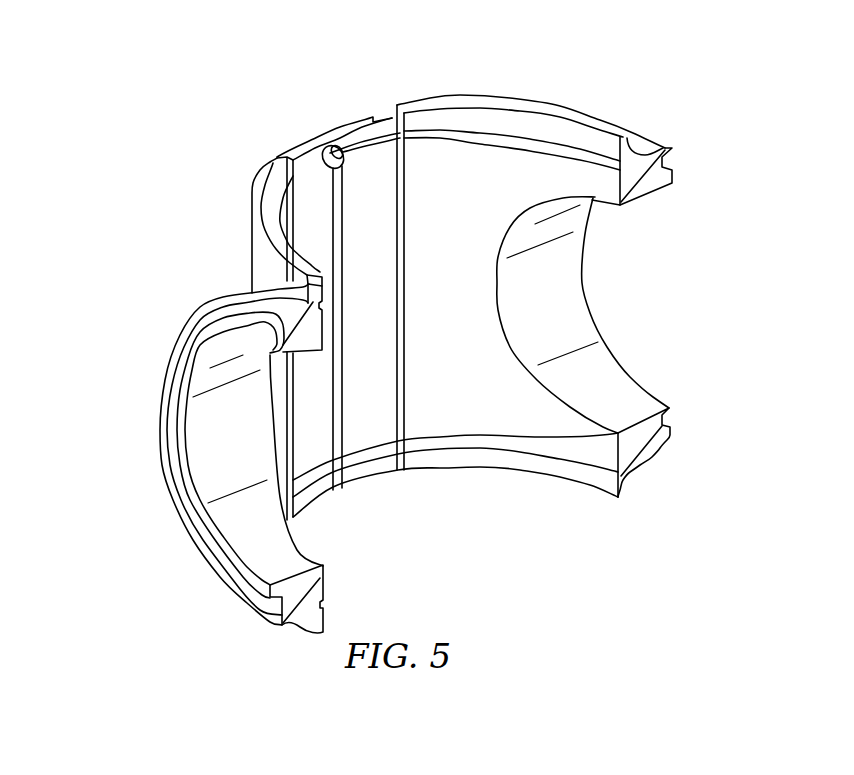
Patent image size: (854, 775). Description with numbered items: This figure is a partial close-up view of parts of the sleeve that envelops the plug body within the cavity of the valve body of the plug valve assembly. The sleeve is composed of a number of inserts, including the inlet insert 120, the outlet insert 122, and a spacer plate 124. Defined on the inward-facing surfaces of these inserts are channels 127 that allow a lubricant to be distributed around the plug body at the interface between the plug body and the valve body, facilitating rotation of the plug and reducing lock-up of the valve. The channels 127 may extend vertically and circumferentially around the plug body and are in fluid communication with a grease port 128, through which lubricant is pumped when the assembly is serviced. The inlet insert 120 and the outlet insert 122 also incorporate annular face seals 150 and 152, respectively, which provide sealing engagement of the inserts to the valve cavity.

The inlet insert 120 is at (480, 98).
The outlet insert 122 is at (187, 435).
The spacer plate 124 is at (373, 116).
The channels 127 is at (340, 488).
The grease port 128 is at (330, 147).
The annular face seal 150 is at (675, 163).
The annular face seal 152 is at (177, 390).